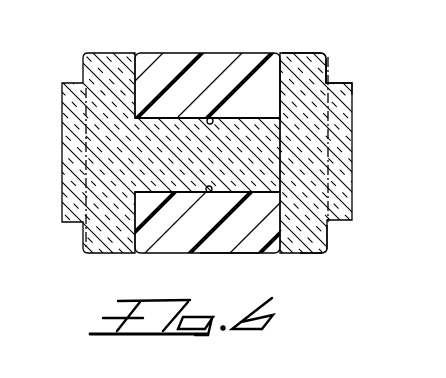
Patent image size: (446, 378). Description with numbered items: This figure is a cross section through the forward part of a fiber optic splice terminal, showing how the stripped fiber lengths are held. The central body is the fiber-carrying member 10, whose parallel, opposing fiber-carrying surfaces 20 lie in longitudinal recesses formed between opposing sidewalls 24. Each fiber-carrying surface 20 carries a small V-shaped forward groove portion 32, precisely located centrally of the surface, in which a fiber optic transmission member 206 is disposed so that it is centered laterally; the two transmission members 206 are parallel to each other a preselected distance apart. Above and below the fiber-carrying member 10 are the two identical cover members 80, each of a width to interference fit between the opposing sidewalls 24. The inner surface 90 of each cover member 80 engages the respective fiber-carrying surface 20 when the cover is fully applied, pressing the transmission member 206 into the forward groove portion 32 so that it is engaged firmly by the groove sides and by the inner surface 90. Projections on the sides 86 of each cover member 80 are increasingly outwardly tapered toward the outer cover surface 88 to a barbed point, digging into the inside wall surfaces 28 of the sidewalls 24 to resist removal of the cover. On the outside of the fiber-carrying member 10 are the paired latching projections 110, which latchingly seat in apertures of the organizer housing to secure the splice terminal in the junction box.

The fiber-carrying member 10 is at (358, 194).
The fiber-carrying surface 20 is at (262, 118).
The sidewall 24 is at (320, 255).
The inside wall surface 28 is at (281, 70).
The forward groove portion 32 is at (207, 130).
The cover member 80 is at (181, 18).
The side 86 is at (285, 82).
The outer cover surface 88 is at (226, 254).
The inner surface 90 is at (262, 120).
The latching projection 110 is at (352, 84).
The fiber optic transmission member 206 is at (208, 116).